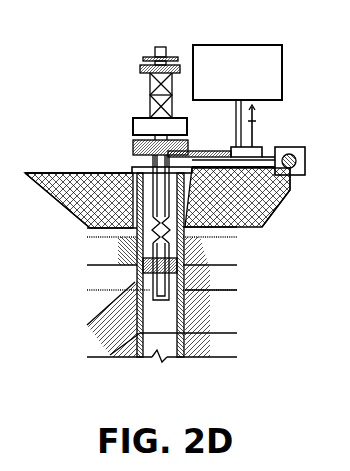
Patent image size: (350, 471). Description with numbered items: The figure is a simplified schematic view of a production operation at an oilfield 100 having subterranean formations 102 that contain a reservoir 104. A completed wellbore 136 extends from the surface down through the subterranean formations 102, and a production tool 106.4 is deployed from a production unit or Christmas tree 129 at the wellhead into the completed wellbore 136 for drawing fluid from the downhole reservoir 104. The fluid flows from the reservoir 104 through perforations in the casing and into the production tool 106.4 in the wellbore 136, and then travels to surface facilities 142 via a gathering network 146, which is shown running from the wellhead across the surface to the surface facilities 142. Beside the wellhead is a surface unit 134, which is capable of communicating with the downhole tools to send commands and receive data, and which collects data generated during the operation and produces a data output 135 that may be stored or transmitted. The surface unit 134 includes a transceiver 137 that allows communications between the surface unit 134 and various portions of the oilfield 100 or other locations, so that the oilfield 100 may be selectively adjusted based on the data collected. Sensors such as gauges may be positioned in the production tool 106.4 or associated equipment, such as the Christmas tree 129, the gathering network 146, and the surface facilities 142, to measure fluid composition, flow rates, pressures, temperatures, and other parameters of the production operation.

The oilfield 100 is at (86, 91).
The subterranean formations 102 is at (249, 270).
The reservoir 104 is at (230, 323).
The production tool 106.4 is at (130, 287).
The Christmas tree 129 is at (158, 47).
The surface unit 134 is at (233, 146).
The data output 135 is at (256, 45).
The wellbore 136 is at (190, 215).
The transceiver 137 is at (256, 125).
The surface facilities 142 is at (304, 157).
The gathering network 146 is at (273, 168).